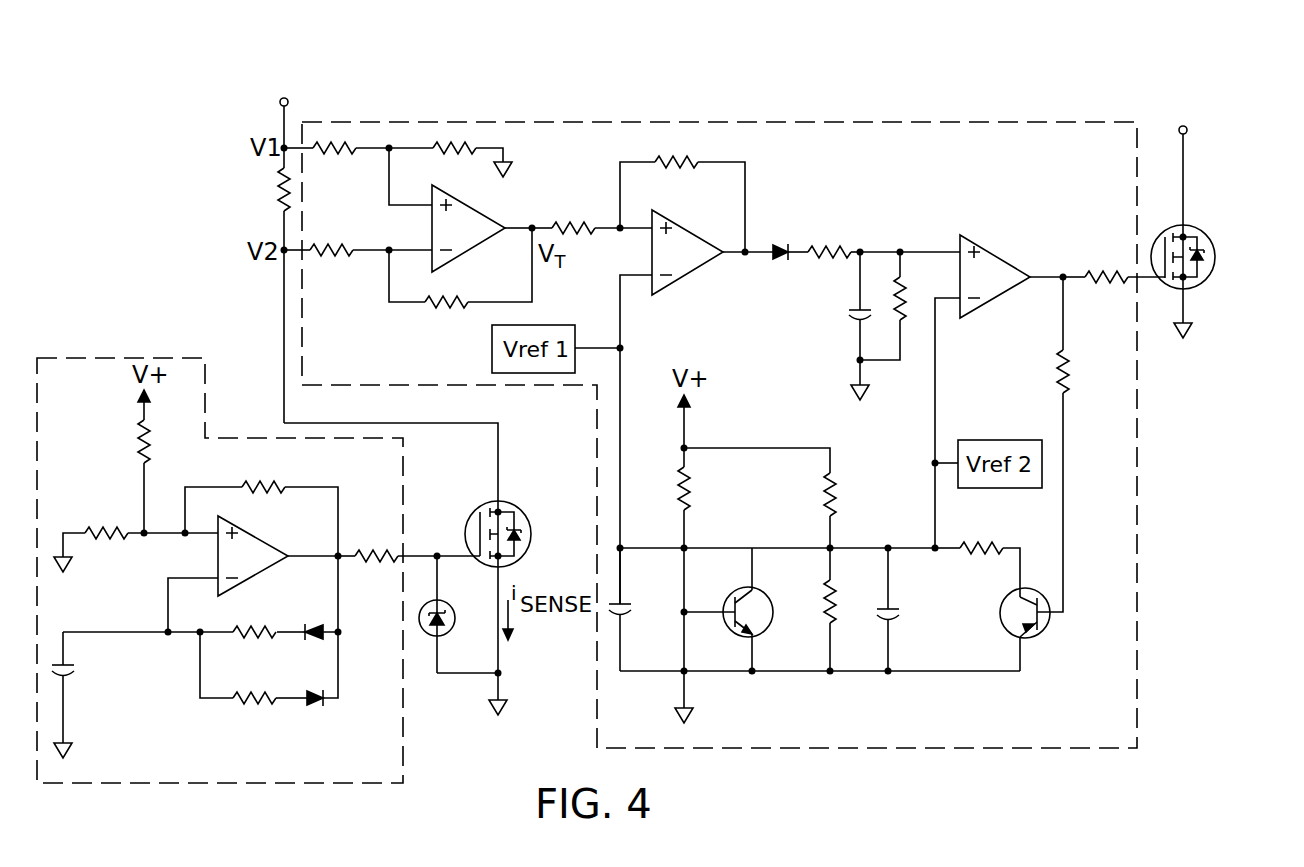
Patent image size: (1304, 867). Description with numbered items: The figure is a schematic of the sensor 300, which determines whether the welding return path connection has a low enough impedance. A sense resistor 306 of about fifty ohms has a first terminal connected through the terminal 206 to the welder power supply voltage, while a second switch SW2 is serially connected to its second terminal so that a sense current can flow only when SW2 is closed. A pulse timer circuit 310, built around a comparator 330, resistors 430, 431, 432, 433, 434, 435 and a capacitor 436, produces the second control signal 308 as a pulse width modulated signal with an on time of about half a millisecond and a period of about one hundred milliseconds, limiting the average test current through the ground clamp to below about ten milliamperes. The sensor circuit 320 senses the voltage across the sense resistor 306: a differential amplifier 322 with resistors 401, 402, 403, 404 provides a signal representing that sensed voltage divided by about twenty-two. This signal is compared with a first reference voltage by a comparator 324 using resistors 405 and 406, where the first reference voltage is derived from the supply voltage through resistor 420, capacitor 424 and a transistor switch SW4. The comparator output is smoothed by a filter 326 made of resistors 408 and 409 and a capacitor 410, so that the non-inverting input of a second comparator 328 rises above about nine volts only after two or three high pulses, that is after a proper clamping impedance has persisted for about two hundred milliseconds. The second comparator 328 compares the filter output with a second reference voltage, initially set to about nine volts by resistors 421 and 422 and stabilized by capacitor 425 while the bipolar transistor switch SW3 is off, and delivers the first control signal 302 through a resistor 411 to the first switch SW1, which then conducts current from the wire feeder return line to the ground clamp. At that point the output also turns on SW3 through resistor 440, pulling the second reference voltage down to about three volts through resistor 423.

The terminal 206 is at (281, 99).
The sensor 300 is at (1086, 86).
The first control signal 302 is at (1046, 274).
The sense resistor 306 is at (280, 197).
The second control signal 308 is at (418, 553).
The pulse timer circuit 310 is at (72, 358).
The sensor circuit 320 is at (838, 124).
The differential amplifier 322 is at (486, 212).
The comparator 324 is at (694, 271).
The filter 326 is at (878, 220).
The second comparator 328 is at (993, 251).
The comparator 330 is at (248, 527).
The resistor 401 is at (333, 153).
The resistor 402 is at (338, 254).
The resistor 403 is at (447, 146).
The resistor 404 is at (442, 306).
The resistor 405 is at (569, 221).
The resistor 406 is at (677, 165).
The resistor 408 is at (832, 247).
The resistor 409 is at (897, 297).
The capacitor 410 is at (850, 317).
The resistor 411 is at (1110, 281).
The resistor 420 is at (688, 493).
The resistor 421 is at (836, 496).
The resistor 422 is at (823, 603).
The resistor 423 is at (981, 543).
The capacitor 424 is at (657, 588).
The capacitor 425 is at (901, 614).
The resistor 430 is at (98, 527).
The resistor 431 is at (140, 447).
The resistor 432 is at (290, 476).
The resistor 433 is at (253, 627).
The resistor 434 is at (257, 693).
The resistor 435 is at (380, 568).
The capacitor 436 is at (74, 670).
The resistor 440 is at (1066, 366).
The first switch SW1 is at (1211, 239).
The second switch SW2 is at (545, 495).
The bipolar transistor switch SW3 is at (1048, 629).
The transistor switch SW4 is at (764, 584).